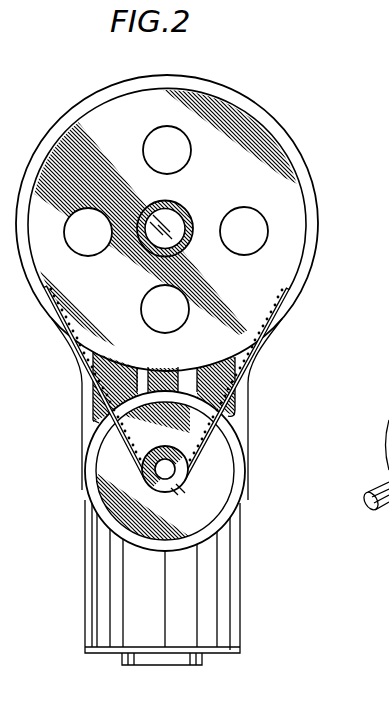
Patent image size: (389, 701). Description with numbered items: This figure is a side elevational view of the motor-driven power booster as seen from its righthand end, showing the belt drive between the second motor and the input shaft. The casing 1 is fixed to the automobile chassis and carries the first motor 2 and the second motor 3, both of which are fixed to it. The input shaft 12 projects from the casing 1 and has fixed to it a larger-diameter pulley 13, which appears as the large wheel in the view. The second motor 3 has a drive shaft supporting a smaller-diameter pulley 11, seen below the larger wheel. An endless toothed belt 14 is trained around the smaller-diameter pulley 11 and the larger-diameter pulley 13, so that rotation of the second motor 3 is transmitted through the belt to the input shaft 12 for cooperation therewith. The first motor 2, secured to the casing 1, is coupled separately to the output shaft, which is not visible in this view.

The casing 1 is at (293, 143).
The larger-diameter pulley 13 is at (285, 180).
The input shaft 12 is at (180, 237).
The endless toothed belt 14 is at (230, 402).
The second motor 3 is at (205, 515).
The smaller-diameter pulley 11 is at (180, 477).
The first motor 2 is at (232, 602).